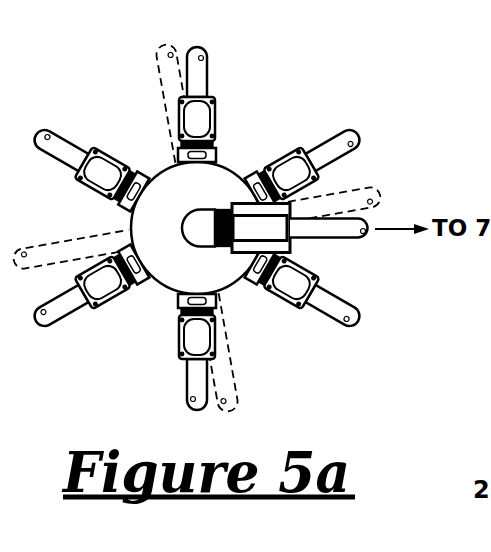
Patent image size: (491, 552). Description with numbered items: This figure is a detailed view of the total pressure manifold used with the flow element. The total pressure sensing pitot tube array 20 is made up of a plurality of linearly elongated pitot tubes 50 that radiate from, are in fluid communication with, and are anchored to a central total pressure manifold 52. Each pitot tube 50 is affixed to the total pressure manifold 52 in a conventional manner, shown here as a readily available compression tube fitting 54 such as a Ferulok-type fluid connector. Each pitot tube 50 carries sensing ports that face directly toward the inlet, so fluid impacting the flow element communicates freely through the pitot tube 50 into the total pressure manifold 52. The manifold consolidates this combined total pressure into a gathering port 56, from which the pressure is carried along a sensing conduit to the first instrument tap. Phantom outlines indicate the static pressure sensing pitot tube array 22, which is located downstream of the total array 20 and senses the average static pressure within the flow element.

The total pressure sensing pitot tube array 20 is at (329, 114).
The static pressure sensing pitot tube array 22 is at (167, 97).
The pitot tube 50 is at (208, 77).
The total pressure manifold 52 is at (172, 270).
The compression tube fitting 54 is at (307, 150).
The gathering port 56 is at (203, 240).